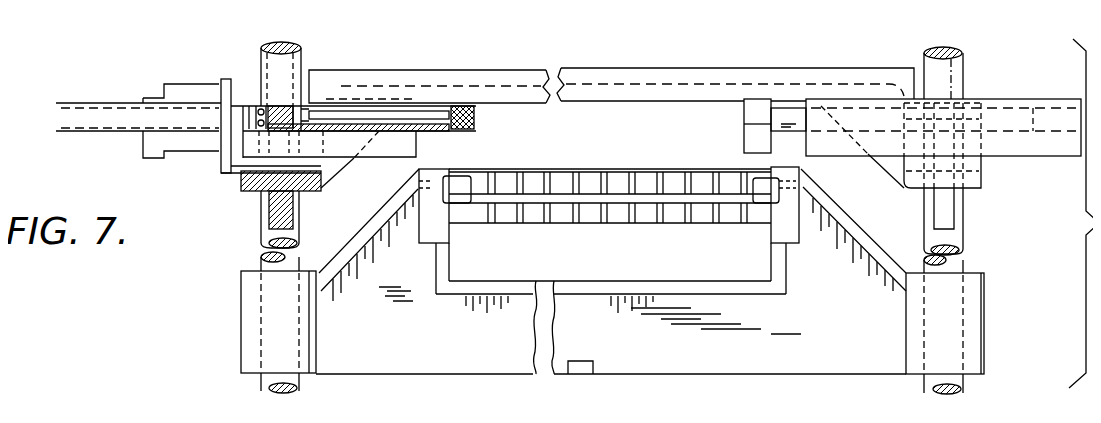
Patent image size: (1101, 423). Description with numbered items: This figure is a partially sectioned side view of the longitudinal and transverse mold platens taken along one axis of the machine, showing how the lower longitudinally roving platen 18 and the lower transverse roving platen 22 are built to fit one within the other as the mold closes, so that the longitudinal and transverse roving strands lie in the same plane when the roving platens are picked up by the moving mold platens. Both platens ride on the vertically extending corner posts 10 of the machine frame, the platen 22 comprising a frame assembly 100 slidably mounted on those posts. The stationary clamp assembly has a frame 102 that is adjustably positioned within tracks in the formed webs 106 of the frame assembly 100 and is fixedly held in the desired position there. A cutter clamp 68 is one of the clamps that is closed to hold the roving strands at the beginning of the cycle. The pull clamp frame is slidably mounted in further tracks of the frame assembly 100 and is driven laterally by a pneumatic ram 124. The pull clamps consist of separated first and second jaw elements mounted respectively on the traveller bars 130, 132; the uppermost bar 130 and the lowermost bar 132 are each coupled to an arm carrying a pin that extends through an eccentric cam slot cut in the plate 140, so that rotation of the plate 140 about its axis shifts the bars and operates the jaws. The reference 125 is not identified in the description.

The corner posts 10 is at (962, 65).
The lower longitudinally roving platen 18 is at (983, 310).
The lower transverse roving platen 22 is at (980, 163).
The cutter clamp 68 is at (747, 135).
The frame assembly 100 is at (313, 343).
The frame 102 is at (788, 127).
The formed webs 106 is at (1040, 150).
The pneumatic ram 124 is at (188, 90).
The flange 125 is at (242, 74).
The traveller bar 130 is at (475, 110).
The traveller bar 132 is at (475, 127).
The plate 140 is at (431, 110).